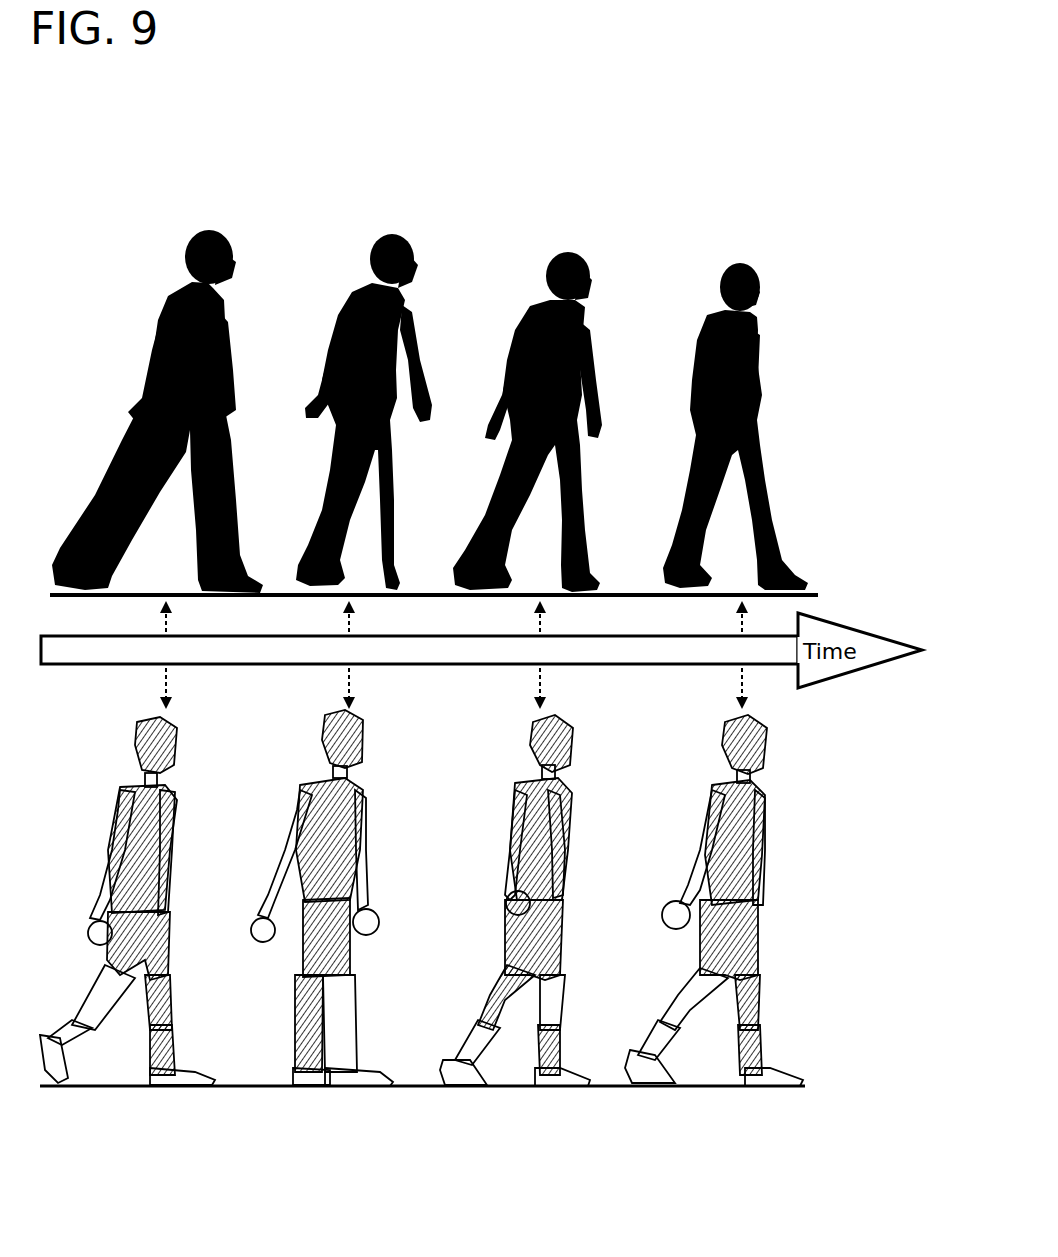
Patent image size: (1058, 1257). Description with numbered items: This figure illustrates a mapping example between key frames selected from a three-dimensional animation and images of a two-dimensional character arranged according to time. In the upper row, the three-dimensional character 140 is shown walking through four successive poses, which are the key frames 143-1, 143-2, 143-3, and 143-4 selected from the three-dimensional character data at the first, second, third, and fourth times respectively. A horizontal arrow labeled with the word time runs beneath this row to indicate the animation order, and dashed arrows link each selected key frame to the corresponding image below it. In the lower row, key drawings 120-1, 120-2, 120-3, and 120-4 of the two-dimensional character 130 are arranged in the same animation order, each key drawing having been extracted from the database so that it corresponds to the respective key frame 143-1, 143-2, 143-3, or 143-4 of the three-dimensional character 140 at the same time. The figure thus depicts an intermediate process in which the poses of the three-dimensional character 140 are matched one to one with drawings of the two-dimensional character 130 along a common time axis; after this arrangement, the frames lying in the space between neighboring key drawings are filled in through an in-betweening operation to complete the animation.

The 3D character 140 is at (754, 336).
The key frame 143-1 is at (160, 298).
The key frame 143-2 is at (340, 306).
The key frame 143-3 is at (526, 307).
The key frame 143-4 is at (710, 307).
The 2D character 130 is at (752, 812).
The key drawing of 2D character 120-1 is at (118, 800).
The key drawing of 2D character 120-2 is at (300, 804).
The key drawing of 2D character 120-3 is at (510, 814).
The key drawing of 2D character 120-4 is at (703, 804).